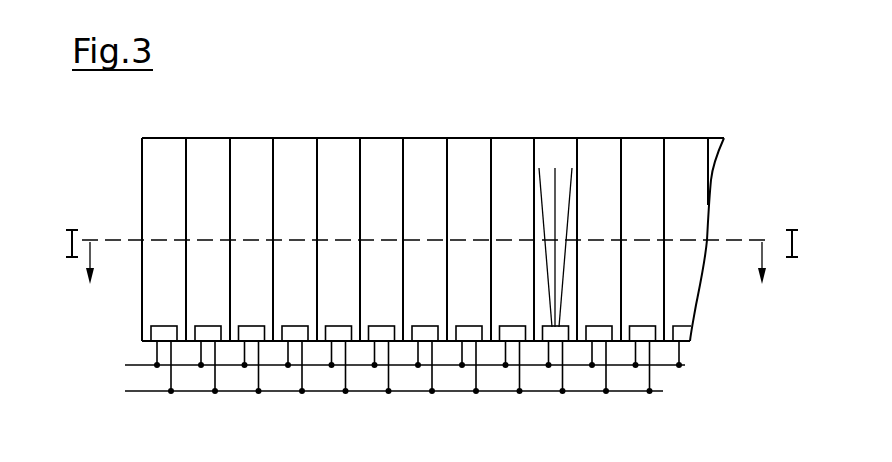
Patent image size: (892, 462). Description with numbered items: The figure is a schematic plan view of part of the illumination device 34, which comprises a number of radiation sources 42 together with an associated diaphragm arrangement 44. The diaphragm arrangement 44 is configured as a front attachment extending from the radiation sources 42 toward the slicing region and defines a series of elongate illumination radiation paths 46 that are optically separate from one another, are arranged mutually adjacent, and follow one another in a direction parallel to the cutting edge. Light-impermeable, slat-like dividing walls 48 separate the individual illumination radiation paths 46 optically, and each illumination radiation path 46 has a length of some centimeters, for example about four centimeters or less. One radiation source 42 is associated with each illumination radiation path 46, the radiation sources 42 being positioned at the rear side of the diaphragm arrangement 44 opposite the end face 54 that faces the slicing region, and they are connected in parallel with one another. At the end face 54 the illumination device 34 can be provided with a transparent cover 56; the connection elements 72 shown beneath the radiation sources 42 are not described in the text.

The illumination device 34 is at (488, 71).
The radiation source 42 is at (162, 333).
The diaphragm arrangement 44 is at (562, 133).
The illumination radiation path 46 is at (162, 168).
The dividing wall 48 is at (188, 183).
The end face 54 is at (433, 113).
The transparent cover 56 is at (360, 137).
The wiring / bus connections 72 is at (200, 343).